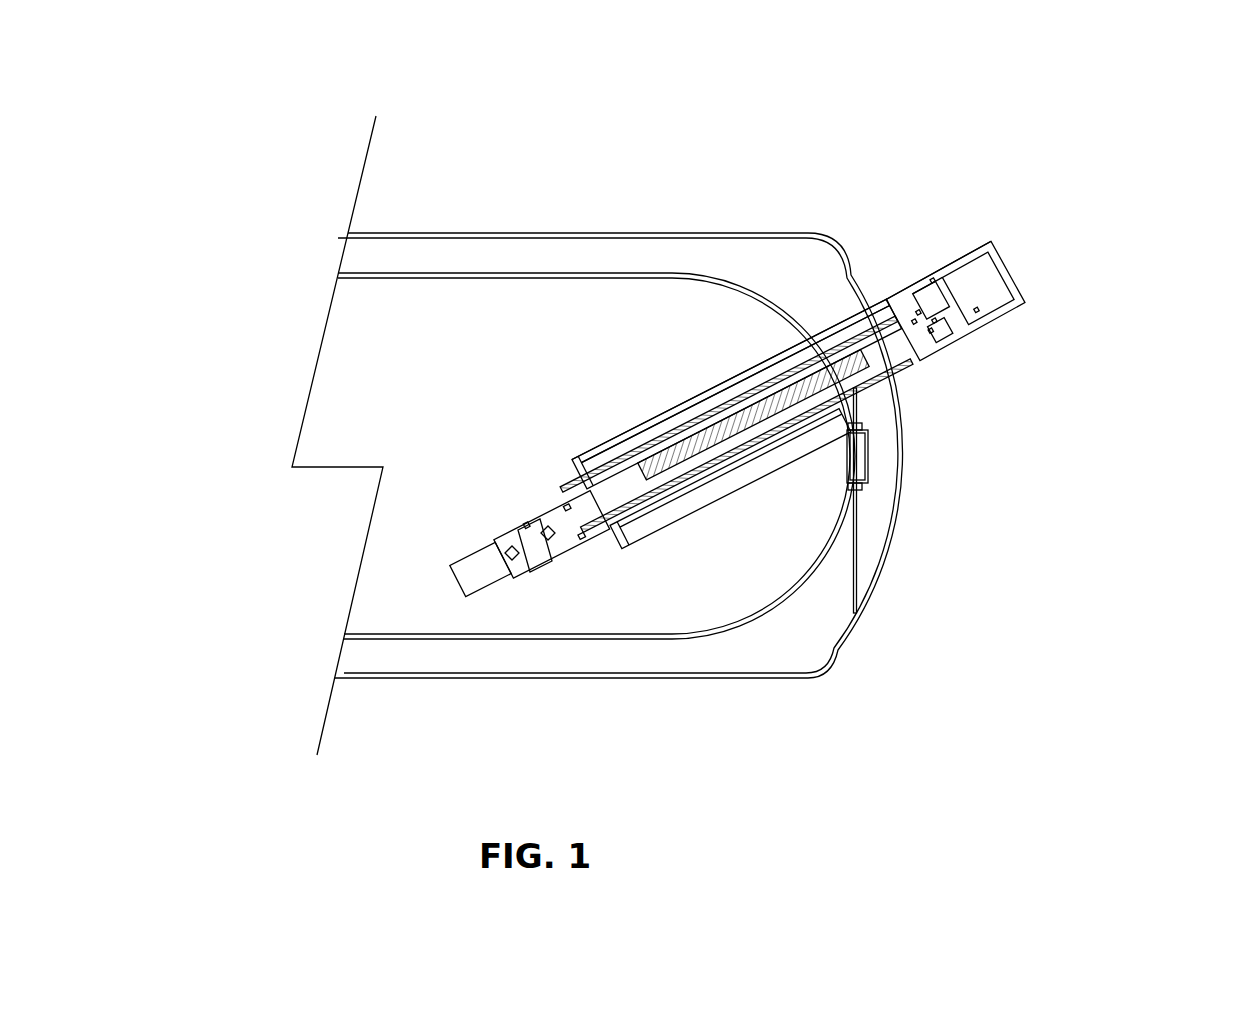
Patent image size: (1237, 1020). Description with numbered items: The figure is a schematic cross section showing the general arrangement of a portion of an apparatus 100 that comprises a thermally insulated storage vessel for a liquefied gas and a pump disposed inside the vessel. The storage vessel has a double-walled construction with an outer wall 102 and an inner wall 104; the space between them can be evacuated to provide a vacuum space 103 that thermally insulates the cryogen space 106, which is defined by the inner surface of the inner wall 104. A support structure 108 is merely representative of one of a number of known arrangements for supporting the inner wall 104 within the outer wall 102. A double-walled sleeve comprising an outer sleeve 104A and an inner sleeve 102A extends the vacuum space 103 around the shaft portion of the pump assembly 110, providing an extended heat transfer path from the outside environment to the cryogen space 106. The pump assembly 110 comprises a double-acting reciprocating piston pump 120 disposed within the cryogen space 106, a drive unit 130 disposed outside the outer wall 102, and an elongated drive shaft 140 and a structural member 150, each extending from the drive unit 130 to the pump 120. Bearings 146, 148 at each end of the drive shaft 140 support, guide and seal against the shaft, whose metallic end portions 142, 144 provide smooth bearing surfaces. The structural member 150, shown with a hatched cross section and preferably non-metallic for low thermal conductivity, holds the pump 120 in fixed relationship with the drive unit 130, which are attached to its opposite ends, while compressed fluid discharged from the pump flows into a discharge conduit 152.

The apparatus 100 is at (412, 95).
The outer wall 102 is at (433, 233).
The inner wall 104 is at (355, 273).
The vacuum space 103 is at (782, 660).
The cryogen space 106 is at (668, 603).
The support structure 108 is at (888, 467).
The pump assembly 110 is at (982, 214).
The double-acting reciprocating piston pump 120 is at (492, 478).
The drive unit 130 is at (890, 231).
The elongated drive shaft 140 is at (745, 385).
The end portion 142 is at (584, 510).
The end portion 144 is at (898, 390).
The bearing 146 is at (600, 475).
The bearing 148 is at (918, 342).
The structural member 150 is at (790, 355).
The discharge conduit 152 is at (908, 373).
The inner sleeve 102A is at (655, 442).
The outer sleeve 104A is at (657, 415).